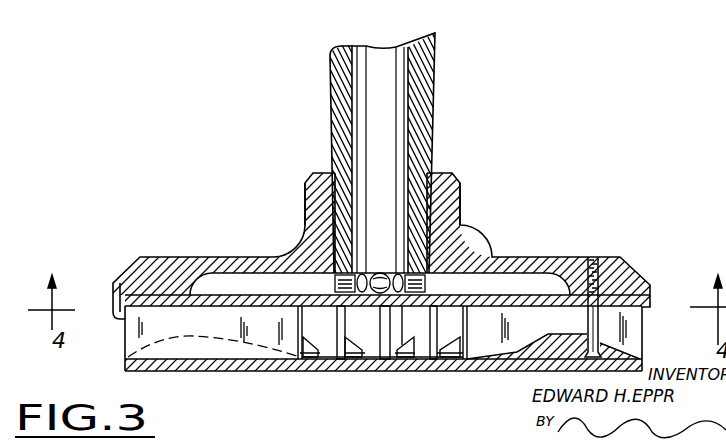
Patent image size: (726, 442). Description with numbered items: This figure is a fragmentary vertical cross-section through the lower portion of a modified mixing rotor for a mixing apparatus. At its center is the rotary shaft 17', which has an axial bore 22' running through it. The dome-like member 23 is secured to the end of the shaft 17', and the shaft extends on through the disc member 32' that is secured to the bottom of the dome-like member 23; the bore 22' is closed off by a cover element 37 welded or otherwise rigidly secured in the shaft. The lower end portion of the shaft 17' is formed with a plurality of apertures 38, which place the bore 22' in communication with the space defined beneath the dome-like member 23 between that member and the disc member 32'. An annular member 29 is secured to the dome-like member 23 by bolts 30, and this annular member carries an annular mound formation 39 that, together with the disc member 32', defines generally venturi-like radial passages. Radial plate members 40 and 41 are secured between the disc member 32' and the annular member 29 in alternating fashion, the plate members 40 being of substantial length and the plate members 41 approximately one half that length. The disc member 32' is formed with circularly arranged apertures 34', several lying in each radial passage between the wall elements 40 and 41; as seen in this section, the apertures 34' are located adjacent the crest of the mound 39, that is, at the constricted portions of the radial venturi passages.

The rotary shaft 17' is at (390, 154).
The bore 22' is at (400, 140).
The dome-like member 23 is at (468, 247).
The annular member 29 is at (212, 362).
The bolts 30 is at (633, 276).
The disc member 32' is at (363, 271).
The apertures 34' is at (598, 288).
The cover element 37 is at (375, 270).
The apertures 38 is at (384, 272).
The annular mound formation 39 is at (548, 333).
The radial plate members 40 is at (128, 330).
The radial plate members 41 is at (632, 325).